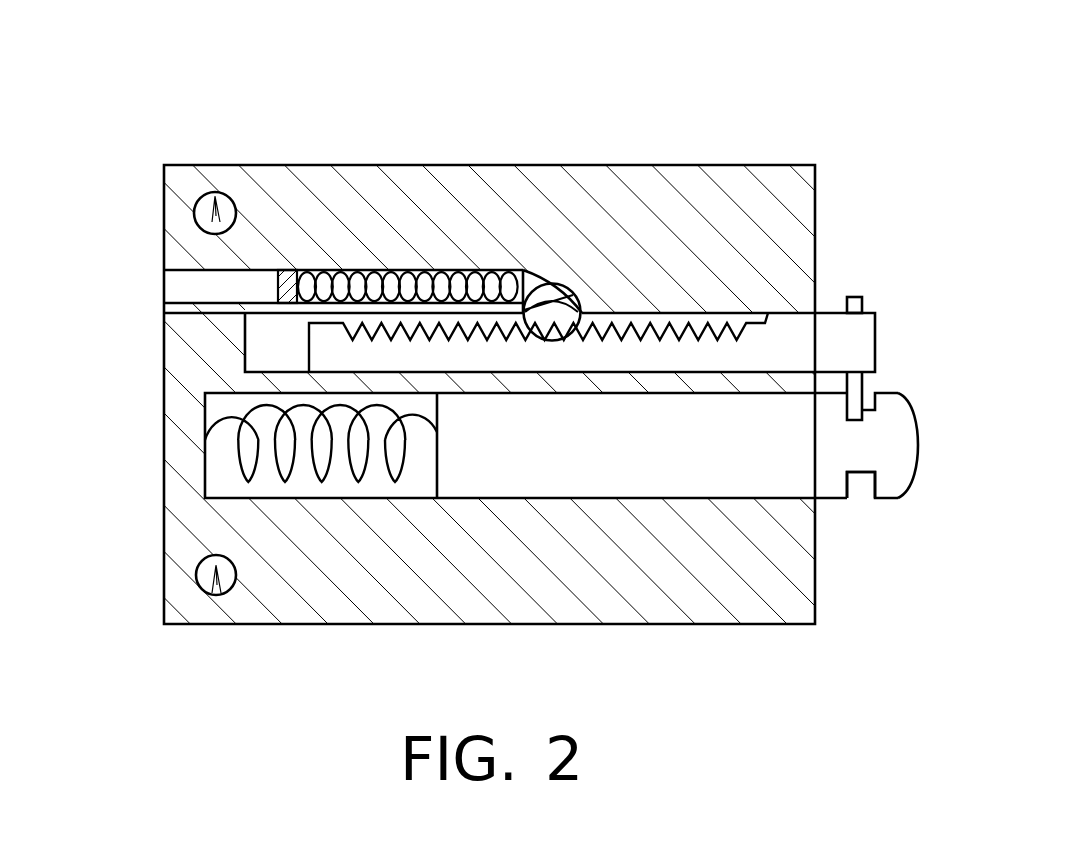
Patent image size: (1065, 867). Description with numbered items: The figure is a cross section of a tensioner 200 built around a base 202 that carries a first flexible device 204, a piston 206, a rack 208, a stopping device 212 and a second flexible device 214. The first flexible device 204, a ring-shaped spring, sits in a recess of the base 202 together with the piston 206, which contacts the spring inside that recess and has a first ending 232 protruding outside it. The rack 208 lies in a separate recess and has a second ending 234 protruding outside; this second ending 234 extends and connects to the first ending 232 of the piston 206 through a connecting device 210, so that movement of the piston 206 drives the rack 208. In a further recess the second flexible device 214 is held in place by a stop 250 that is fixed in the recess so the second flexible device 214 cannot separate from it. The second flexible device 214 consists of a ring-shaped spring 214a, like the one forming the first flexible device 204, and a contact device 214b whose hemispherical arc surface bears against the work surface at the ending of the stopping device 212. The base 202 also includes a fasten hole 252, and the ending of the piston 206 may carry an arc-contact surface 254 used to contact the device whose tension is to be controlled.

The tensioner 200 is at (952, 136).
The base 202 is at (180, 162).
The first flexible device 204 is at (238, 436).
The piston 206 is at (680, 453).
The rack 208 is at (791, 321).
The connecting device 210 is at (866, 304).
The stopping device 212 is at (550, 284).
The second flexible device 214 is at (545, 82).
The ring-shaped spring 214a is at (360, 270).
The contact device 214b is at (528, 270).
The first ending 232 is at (883, 502).
The second ending 234 is at (866, 343).
The stop 250 is at (278, 288).
The fasten hole 252 is at (215, 195).
The arc-contact surface 254 is at (917, 448).